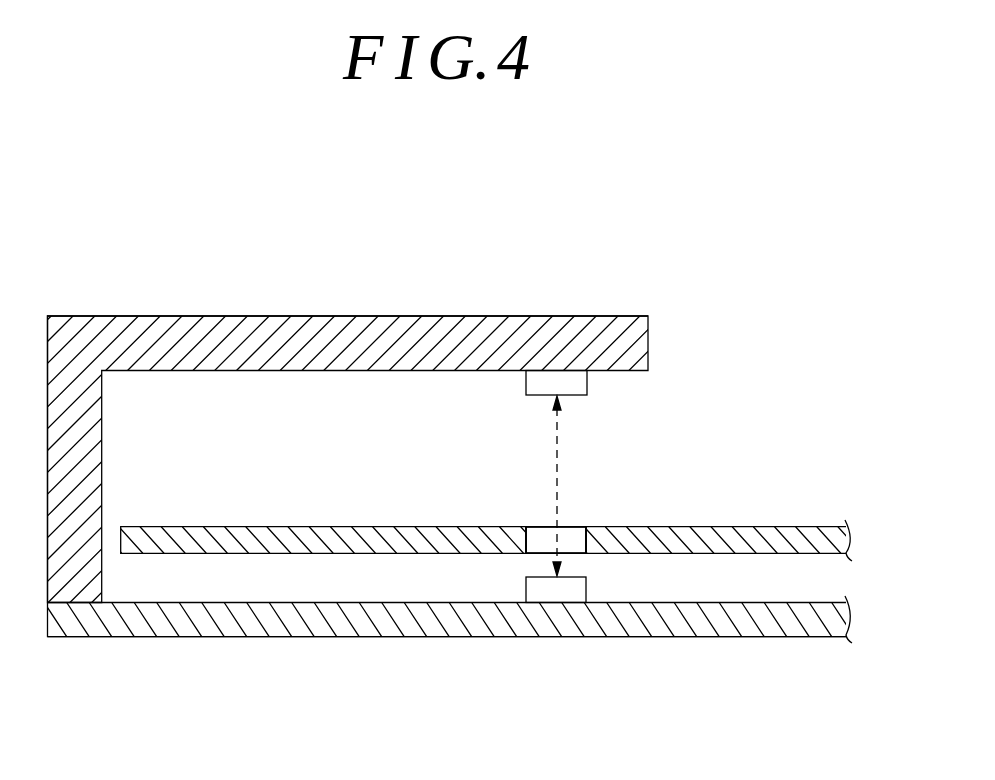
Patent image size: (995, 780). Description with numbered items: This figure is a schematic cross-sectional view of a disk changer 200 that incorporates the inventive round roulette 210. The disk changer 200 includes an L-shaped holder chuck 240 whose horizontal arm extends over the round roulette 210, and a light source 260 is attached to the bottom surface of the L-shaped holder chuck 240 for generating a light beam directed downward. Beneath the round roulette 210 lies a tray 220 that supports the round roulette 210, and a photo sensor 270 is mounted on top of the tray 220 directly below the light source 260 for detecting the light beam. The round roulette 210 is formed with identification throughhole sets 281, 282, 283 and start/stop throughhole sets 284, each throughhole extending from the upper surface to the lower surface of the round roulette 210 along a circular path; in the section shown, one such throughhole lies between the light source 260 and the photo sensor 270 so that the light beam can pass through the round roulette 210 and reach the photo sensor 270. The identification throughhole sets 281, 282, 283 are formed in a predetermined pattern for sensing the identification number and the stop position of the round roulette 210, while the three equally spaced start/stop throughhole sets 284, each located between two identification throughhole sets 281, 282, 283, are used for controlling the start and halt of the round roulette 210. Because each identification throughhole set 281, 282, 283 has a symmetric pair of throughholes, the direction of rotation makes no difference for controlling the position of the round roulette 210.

The disk changer 200 is at (718, 160).
The round roulette 210 is at (763, 542).
The tray 220 is at (742, 627).
The L-shaped holder chuck 240 is at (367, 340).
The light source 260 is at (555, 383).
The photo sensor 270 is at (563, 592).
The identification throughhole set 281 is at (543, 538).
The identification throughhole set 282 is at (556, 540).
The identification throughhole set 283 is at (556, 540).
The start/stop throughhole set 284 is at (556, 540).